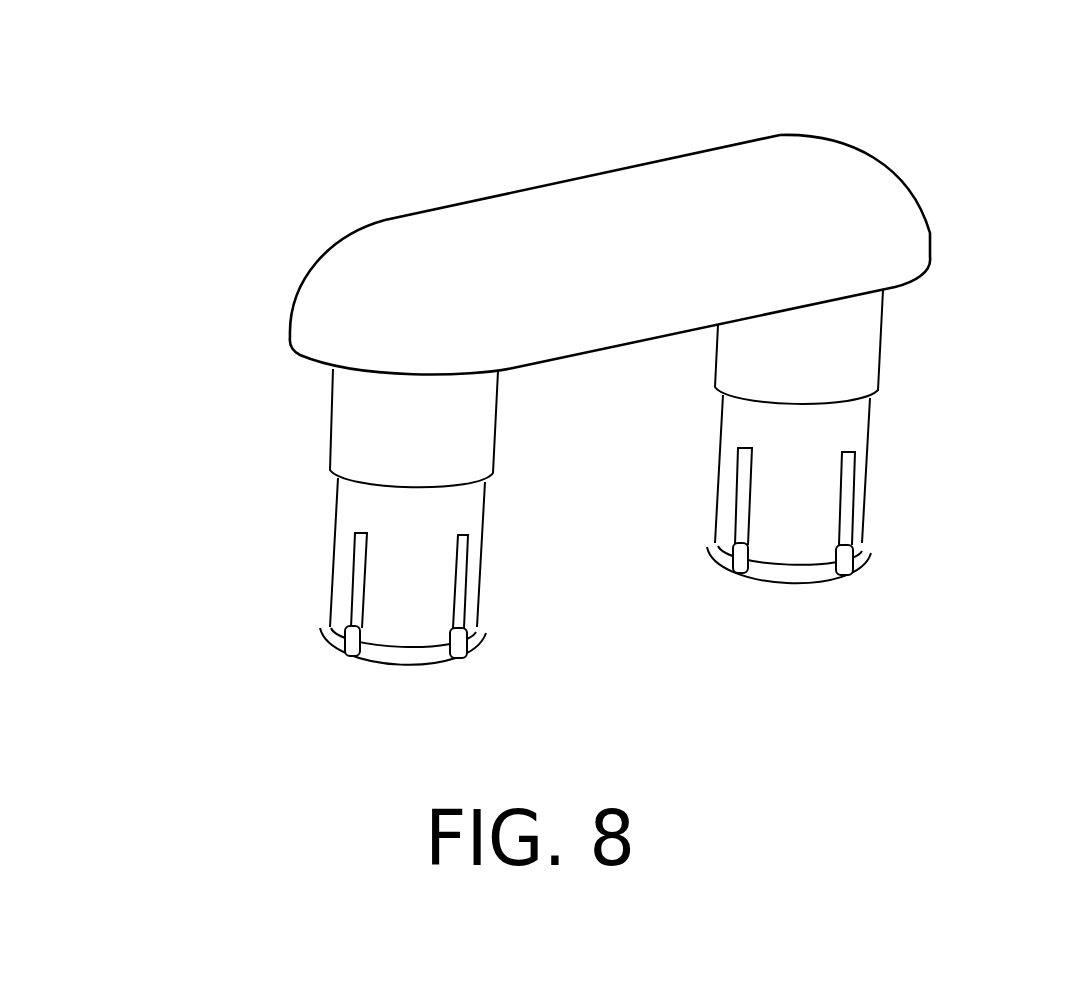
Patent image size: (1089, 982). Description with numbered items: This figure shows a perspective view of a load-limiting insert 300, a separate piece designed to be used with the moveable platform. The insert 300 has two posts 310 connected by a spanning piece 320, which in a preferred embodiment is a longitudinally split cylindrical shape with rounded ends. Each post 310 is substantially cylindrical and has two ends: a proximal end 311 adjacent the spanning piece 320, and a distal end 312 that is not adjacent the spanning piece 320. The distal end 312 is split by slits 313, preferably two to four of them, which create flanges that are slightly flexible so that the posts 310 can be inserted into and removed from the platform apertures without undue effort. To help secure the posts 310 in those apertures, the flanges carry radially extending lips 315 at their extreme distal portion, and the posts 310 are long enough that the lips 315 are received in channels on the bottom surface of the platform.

The load-limiting insert 300 is at (903, 175).
The spanning piece 320 is at (607, 207).
The proximal end 311 is at (343, 382).
The post 310 is at (357, 447).
The slit 313 is at (352, 585).
The distal end 312 is at (408, 665).
The radially extending lip 315 is at (323, 643).